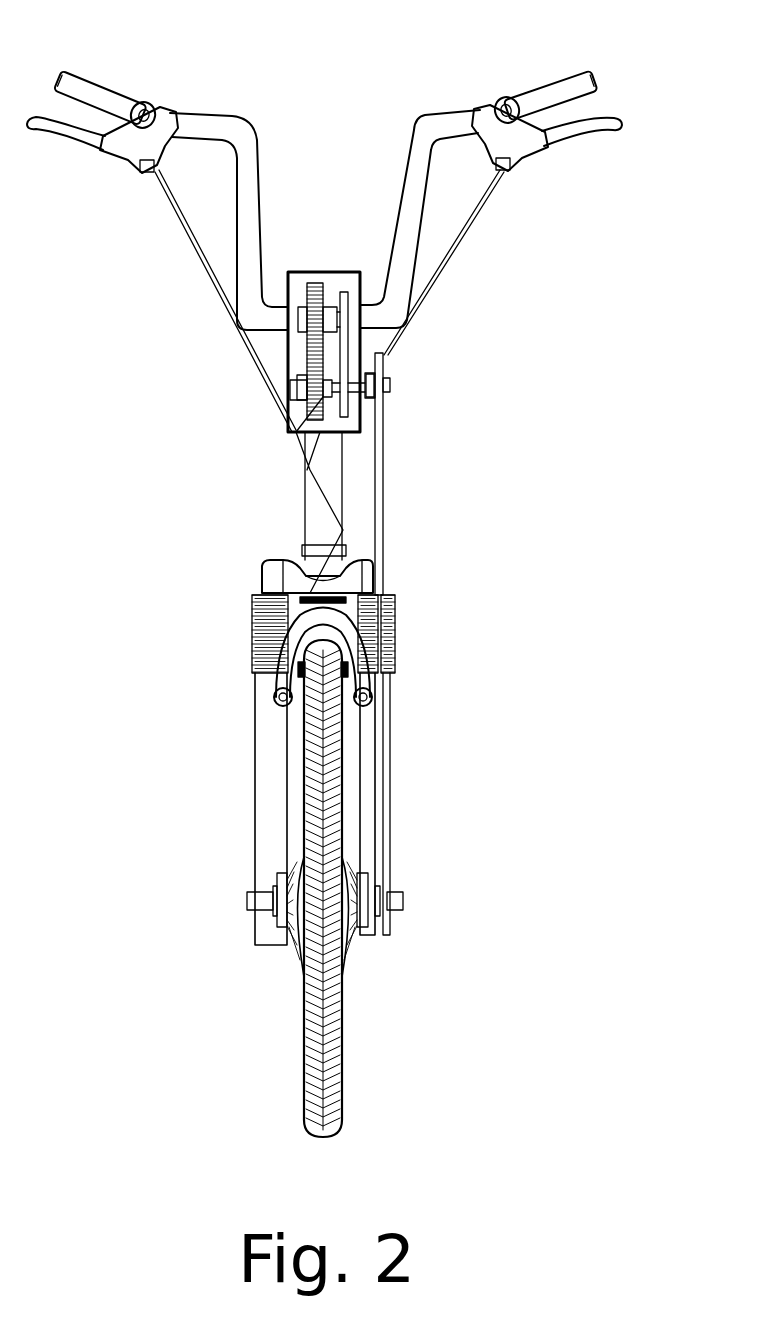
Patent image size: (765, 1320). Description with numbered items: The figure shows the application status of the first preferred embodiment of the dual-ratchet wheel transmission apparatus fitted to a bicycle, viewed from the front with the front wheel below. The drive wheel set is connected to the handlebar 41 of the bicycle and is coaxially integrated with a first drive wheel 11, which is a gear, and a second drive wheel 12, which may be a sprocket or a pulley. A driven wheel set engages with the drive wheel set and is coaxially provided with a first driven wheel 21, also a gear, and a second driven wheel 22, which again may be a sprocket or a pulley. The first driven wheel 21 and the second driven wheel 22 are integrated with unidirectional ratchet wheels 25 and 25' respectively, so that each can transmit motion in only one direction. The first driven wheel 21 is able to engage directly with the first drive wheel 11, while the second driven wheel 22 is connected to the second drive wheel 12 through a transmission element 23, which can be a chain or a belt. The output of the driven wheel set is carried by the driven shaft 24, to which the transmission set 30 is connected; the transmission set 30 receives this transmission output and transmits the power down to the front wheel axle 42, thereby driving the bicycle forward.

The handlebar 41 is at (431, 128).
The second drive wheel 12 is at (340, 292).
The first drive wheel 11 is at (305, 322).
The transmission element 23 is at (348, 322).
The unidirectional ratchet wheel 25 is at (212, 362).
The first driven wheel 21 is at (307, 395).
The driven shaft 24 is at (297, 432).
The second driven wheel 22 is at (305, 455).
The transmission set 30 is at (399, 383).
The unidirectional ratchet wheel 25' is at (437, 436).
The front wheel axle 42 is at (247, 900).